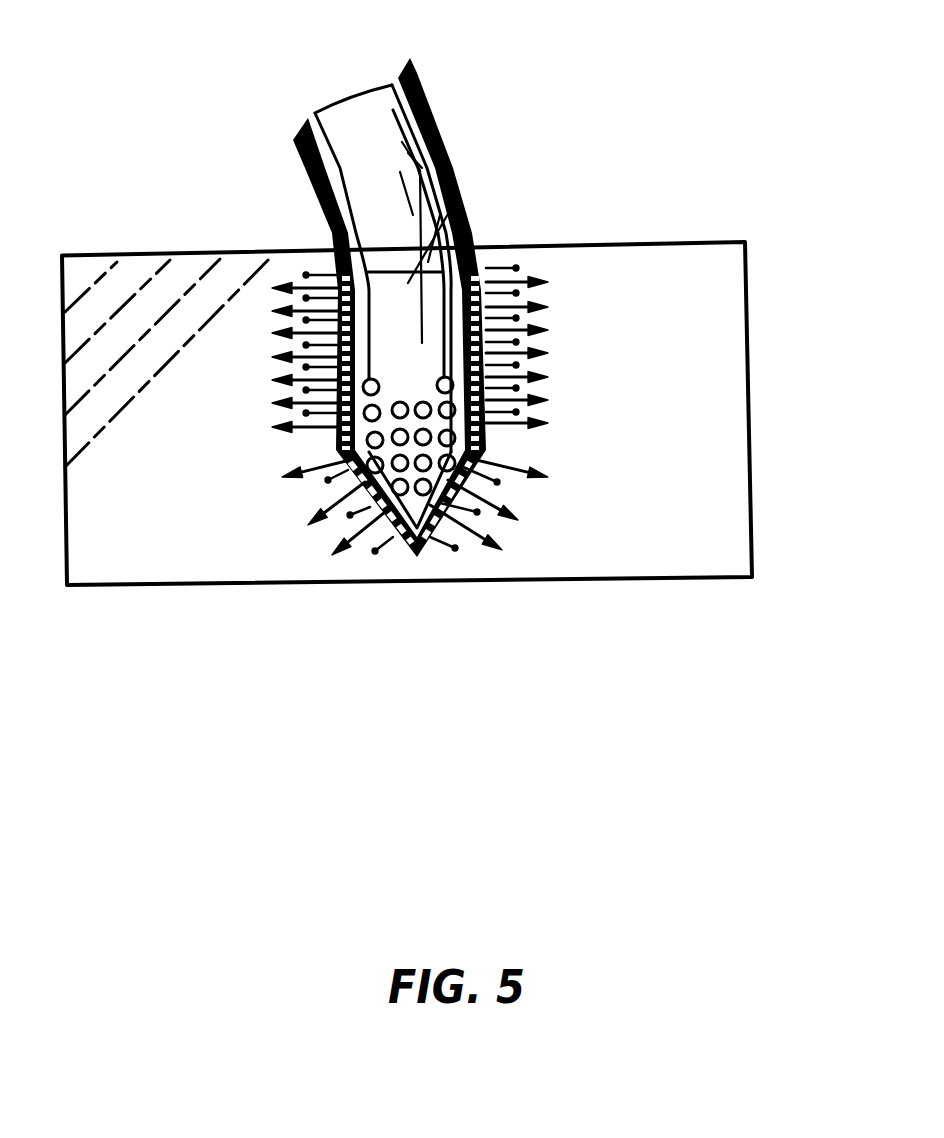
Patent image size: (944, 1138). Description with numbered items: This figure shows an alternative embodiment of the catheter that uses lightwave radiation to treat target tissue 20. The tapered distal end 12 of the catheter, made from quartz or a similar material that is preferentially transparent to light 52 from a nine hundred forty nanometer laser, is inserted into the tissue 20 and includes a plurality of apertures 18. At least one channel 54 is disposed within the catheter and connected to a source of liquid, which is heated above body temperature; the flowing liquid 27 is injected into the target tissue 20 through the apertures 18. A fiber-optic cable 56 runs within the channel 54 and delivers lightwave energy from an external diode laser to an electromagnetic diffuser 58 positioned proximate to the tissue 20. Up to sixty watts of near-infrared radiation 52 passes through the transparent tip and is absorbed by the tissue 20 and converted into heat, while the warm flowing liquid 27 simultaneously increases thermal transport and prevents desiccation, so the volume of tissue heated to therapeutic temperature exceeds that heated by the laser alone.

The distal end 12 is at (455, 124).
The apertures 18 is at (428, 540).
The target tissue 20 is at (750, 318).
The flowing liquid 27 is at (548, 421).
The light 52 is at (503, 268).
The channel 54 is at (312, 112).
The fiber-optic cable 56 is at (358, 102).
The electromagnetic diffuser 58 is at (468, 192).